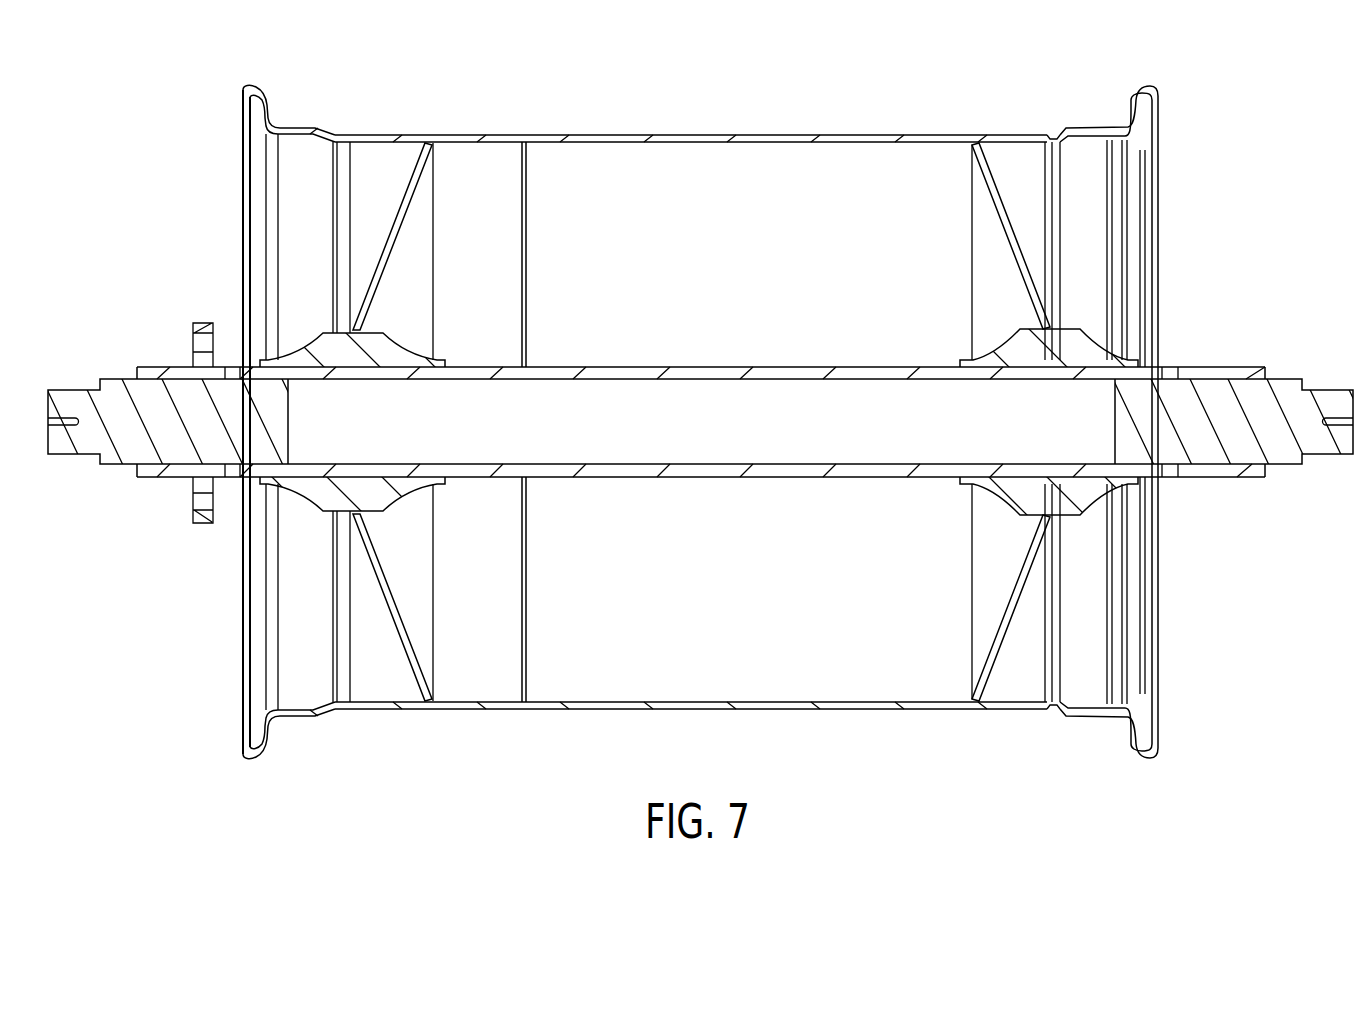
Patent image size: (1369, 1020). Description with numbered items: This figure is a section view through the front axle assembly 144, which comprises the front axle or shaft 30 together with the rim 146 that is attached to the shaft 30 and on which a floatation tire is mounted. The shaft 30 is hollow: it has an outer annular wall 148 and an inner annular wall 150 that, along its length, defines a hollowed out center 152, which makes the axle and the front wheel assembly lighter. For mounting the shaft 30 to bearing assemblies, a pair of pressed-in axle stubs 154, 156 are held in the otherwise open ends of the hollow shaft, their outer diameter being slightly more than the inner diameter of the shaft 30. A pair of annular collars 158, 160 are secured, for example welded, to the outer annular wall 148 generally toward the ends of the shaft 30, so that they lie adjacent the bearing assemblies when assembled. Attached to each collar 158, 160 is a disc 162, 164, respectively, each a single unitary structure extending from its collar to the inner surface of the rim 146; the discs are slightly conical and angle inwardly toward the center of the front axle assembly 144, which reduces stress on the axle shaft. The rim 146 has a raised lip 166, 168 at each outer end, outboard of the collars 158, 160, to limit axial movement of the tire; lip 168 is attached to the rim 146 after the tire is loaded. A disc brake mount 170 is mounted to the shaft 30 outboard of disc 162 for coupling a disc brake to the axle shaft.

The front axle or shaft 30 is at (894, 342).
The front axle assembly 144 is at (194, 694).
The rim 146 is at (375, 723).
The outer annular wall 148 is at (872, 478).
The inner annular wall 150 is at (706, 383).
The hollowed out center 152 is at (748, 422).
The axle stub 154 is at (128, 450).
The axle stub 156 is at (1290, 384).
The annular collar 158 is at (397, 353).
The annular collar 160 is at (1013, 492).
The disc 162 is at (388, 254).
The disc 164 is at (1012, 597).
The raised lip 166 is at (265, 103).
The raised lip 168 is at (1140, 92).
The disc brake mount 170 is at (202, 523).